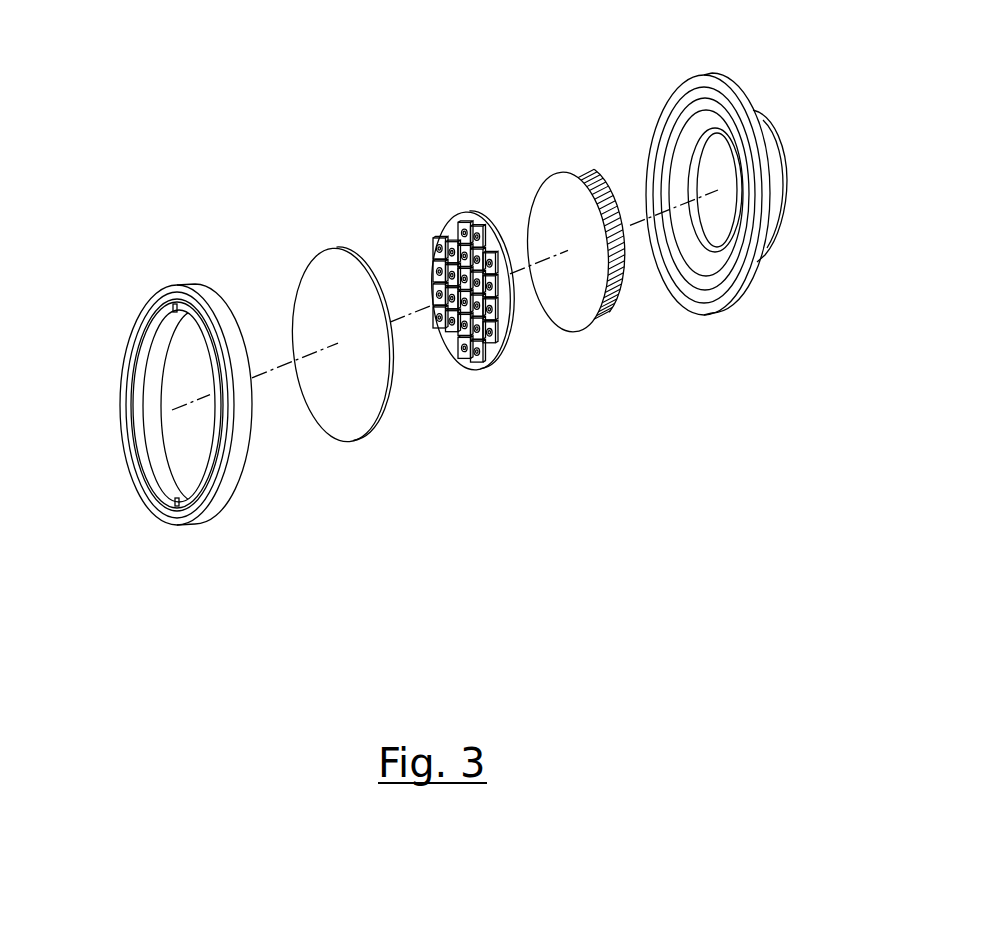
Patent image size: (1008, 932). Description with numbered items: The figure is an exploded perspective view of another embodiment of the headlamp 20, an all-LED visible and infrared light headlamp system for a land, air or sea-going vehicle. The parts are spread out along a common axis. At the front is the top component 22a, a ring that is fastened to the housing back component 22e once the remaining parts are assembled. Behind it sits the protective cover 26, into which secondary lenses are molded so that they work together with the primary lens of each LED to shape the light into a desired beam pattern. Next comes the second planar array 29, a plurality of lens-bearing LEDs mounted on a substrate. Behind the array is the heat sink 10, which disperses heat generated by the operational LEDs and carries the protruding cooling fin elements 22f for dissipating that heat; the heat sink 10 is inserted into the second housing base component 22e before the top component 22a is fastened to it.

The headlamp 20 is at (272, 553).
The top component 22a is at (145, 305).
The protective cover 26 is at (312, 252).
The second planar array 29 is at (445, 222).
The heat sink 10 is at (542, 182).
The protruding cooling fin elements 22f is at (587, 183).
The second housing base component 22e is at (665, 100).